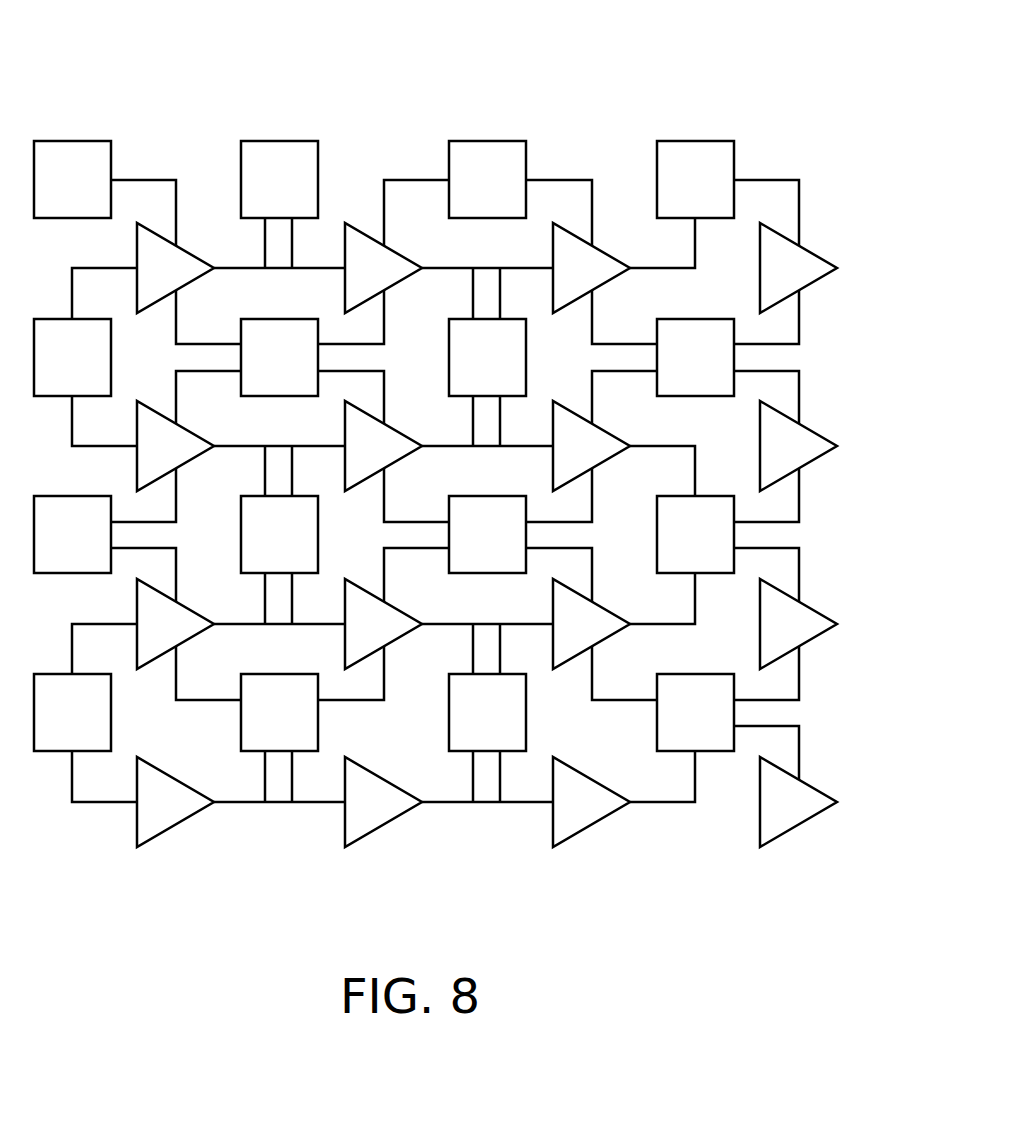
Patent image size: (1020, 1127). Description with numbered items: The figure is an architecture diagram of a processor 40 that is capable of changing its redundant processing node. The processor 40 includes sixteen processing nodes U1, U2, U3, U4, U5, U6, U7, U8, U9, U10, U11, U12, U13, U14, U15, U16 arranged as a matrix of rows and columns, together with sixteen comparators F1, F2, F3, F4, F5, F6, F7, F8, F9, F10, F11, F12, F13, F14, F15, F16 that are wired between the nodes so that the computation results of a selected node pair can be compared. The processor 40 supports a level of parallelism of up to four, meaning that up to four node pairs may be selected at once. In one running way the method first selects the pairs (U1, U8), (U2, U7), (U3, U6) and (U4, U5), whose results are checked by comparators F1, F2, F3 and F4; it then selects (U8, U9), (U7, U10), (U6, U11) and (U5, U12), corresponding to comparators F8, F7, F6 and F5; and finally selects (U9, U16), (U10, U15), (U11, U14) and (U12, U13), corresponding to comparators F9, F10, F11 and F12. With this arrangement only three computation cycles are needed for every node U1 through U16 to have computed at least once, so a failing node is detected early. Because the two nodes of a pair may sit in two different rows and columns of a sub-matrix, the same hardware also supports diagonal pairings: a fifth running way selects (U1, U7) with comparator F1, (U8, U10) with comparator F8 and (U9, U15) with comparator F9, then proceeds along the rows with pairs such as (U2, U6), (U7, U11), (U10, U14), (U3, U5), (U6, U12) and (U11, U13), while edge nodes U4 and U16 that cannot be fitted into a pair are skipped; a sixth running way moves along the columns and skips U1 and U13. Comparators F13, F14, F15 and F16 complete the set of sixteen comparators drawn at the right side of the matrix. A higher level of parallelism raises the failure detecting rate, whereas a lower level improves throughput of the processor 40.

The processor 40 is at (121, 46).
The processing node U1 is at (72, 179).
The processing node U2 is at (72, 357).
The processing node U3 is at (72, 534).
The processing node U4 is at (72, 712).
The processing node U5 is at (279, 712).
The processing node U6 is at (279, 534).
The processing node U7 is at (279, 357).
The processing node U8 is at (279, 179).
The processing node U9 is at (487, 179).
The processing node U10 is at (487, 357).
The processing node U11 is at (487, 534).
The processing node U12 is at (487, 712).
The processing node U13 is at (695, 712).
The processing node U14 is at (695, 534).
The processing node U15 is at (695, 357).
The processing node U16 is at (695, 179).
The comparator F1 is at (175, 268).
The comparator F2 is at (175, 446).
The comparator F3 is at (175, 624).
The comparator F4 is at (175, 802).
The comparator F5 is at (383, 802).
The comparator F6 is at (383, 624).
The comparator F7 is at (383, 446).
The comparator F8 is at (383, 268).
The comparator F9 is at (591, 268).
The comparator F10 is at (591, 446).
The comparator F11 is at (591, 624).
The comparator F12 is at (591, 802).
The comparator F13 is at (798, 802).
The comparator F14 is at (798, 624).
The comparator F15 is at (798, 446).
The comparator F16 is at (798, 268).